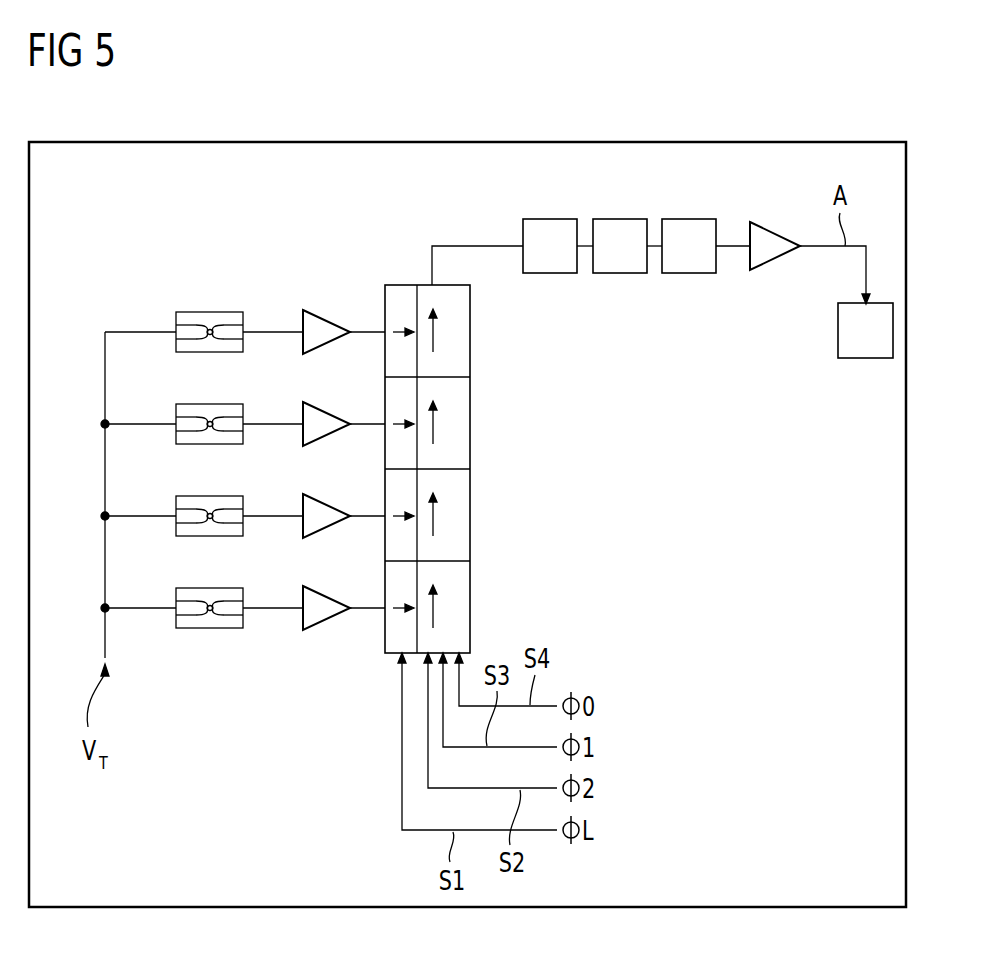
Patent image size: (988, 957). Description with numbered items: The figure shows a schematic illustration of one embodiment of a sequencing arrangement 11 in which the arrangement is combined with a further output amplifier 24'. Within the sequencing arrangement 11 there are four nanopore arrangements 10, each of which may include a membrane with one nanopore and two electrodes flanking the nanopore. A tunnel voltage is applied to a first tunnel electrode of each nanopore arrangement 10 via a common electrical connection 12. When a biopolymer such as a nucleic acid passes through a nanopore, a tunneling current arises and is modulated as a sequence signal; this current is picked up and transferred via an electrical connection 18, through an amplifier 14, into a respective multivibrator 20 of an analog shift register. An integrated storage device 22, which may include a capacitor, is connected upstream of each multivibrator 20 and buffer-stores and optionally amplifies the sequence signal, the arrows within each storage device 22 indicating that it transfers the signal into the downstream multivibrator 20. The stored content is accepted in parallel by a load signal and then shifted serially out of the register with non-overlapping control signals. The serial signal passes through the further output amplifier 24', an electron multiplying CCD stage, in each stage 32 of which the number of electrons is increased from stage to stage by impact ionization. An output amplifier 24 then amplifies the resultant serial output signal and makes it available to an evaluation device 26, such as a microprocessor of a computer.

The nanopore arrangement 10 is at (176, 312).
The sequencing arrangement 11 is at (290, 142).
The electrical connection 12 is at (105, 452).
The amplifier 14 is at (332, 318).
The electrical connection 18 is at (274, 330).
The multivibrator 20 is at (458, 346).
The integrated storage device 22 is at (407, 295).
The output amplifier 24 is at (775, 223).
The further output amplifier 24' is at (649, 180).
The evaluation device 26 is at (865, 358).
The stage 32 is at (552, 273).